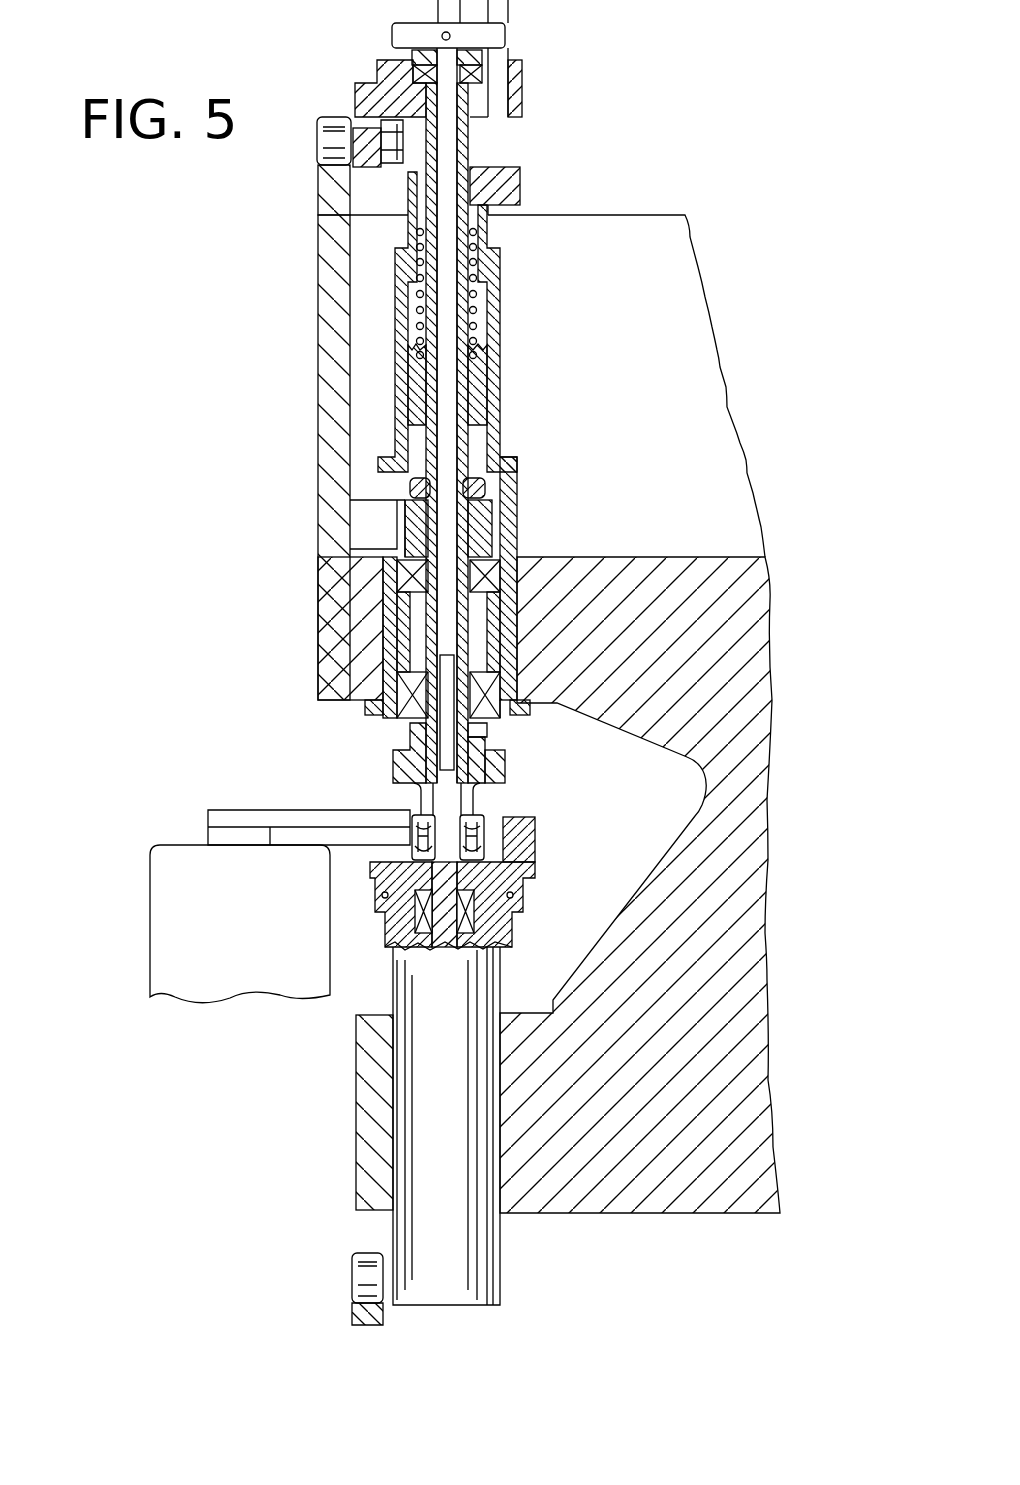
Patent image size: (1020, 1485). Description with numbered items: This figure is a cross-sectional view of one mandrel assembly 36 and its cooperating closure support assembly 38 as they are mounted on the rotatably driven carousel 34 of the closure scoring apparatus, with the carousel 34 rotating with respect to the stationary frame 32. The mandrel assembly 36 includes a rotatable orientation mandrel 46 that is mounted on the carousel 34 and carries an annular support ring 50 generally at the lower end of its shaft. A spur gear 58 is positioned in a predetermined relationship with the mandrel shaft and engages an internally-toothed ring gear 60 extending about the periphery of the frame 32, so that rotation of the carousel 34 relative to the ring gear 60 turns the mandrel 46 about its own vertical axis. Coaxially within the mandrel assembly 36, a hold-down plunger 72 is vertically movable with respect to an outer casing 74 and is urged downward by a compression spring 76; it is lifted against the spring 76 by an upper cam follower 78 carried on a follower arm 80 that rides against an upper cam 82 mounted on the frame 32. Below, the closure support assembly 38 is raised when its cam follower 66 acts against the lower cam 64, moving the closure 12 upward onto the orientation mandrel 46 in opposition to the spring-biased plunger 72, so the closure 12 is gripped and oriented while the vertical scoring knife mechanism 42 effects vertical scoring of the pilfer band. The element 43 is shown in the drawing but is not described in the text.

The closure 12 is at (400, 839).
The frame 32 is at (330, 366).
The carousel 34 is at (668, 580).
The mandrel assembly 36 is at (522, 470).
The closure support assembly 38 is at (378, 964).
The vertical scoring knife mechanism 42 is at (243, 822).
The ring 43 is at (478, 730).
The orientation mandrel 46 is at (398, 734).
The annular support ring 50 is at (505, 762).
The spur gear 58 is at (488, 512).
The ring gear 60 is at (377, 528).
The lower cam 64 is at (352, 1320).
The cam follower 66 is at (352, 1258).
The hold-down plunger 72 is at (452, 442).
The outer casing 74 is at (500, 350).
The compression spring 76 is at (478, 292).
The upper cam follower 78 is at (320, 118).
The follower arm 80 is at (358, 80).
The upper cam 82 is at (318, 200).